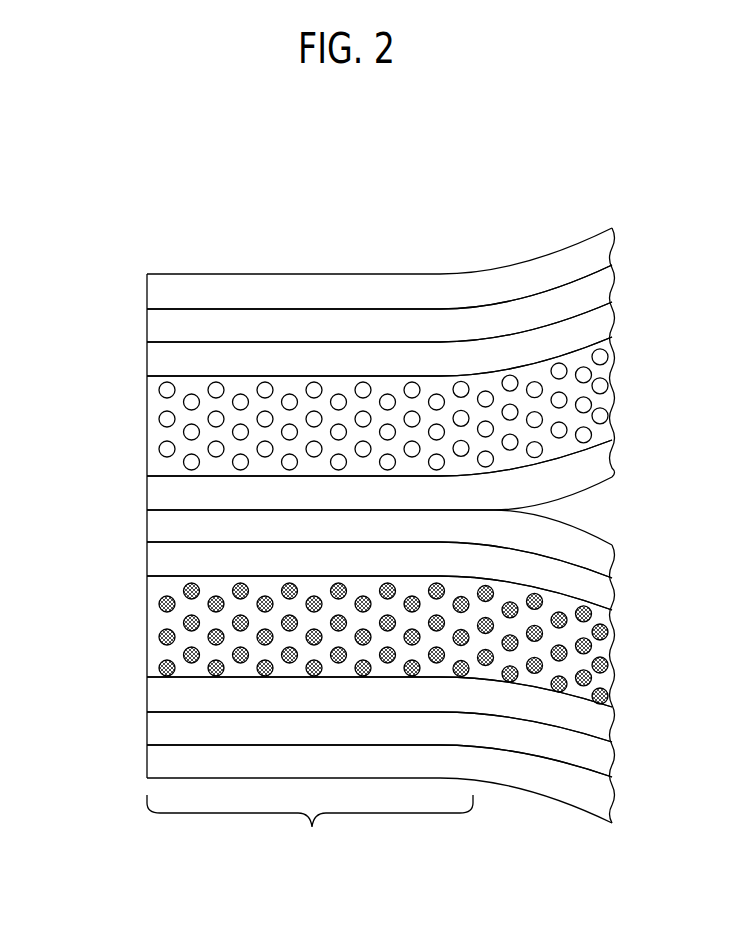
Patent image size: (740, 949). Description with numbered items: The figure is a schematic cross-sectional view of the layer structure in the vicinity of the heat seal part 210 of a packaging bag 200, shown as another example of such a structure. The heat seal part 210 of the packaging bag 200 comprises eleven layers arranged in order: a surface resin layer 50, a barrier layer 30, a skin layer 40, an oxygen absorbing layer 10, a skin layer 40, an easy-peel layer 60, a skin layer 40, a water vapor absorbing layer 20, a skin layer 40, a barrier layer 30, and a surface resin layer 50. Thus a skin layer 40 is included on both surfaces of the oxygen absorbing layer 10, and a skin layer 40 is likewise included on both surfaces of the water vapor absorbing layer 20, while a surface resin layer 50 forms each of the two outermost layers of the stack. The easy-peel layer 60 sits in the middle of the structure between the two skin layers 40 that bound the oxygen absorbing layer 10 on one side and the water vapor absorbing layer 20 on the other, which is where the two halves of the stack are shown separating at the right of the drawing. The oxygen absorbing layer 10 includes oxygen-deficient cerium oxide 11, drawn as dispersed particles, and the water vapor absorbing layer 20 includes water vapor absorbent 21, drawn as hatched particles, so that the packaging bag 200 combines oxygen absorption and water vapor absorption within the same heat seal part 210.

The packaging bag 200 is at (215, 230).
The heat seal part 210 is at (310, 828).
The oxygen absorbing layer 10 is at (162, 433).
The oxygen-deficient cerium oxide 11 is at (337, 394).
The water vapor absorbing layer 20 is at (162, 626).
The water vapor absorbent 21 is at (412, 668).
The barrier layer 30 is at (162, 327).
The skin layer 40 is at (162, 360).
The surface resin layer 50 is at (162, 294).
The easy-peel layer 60 is at (162, 527).